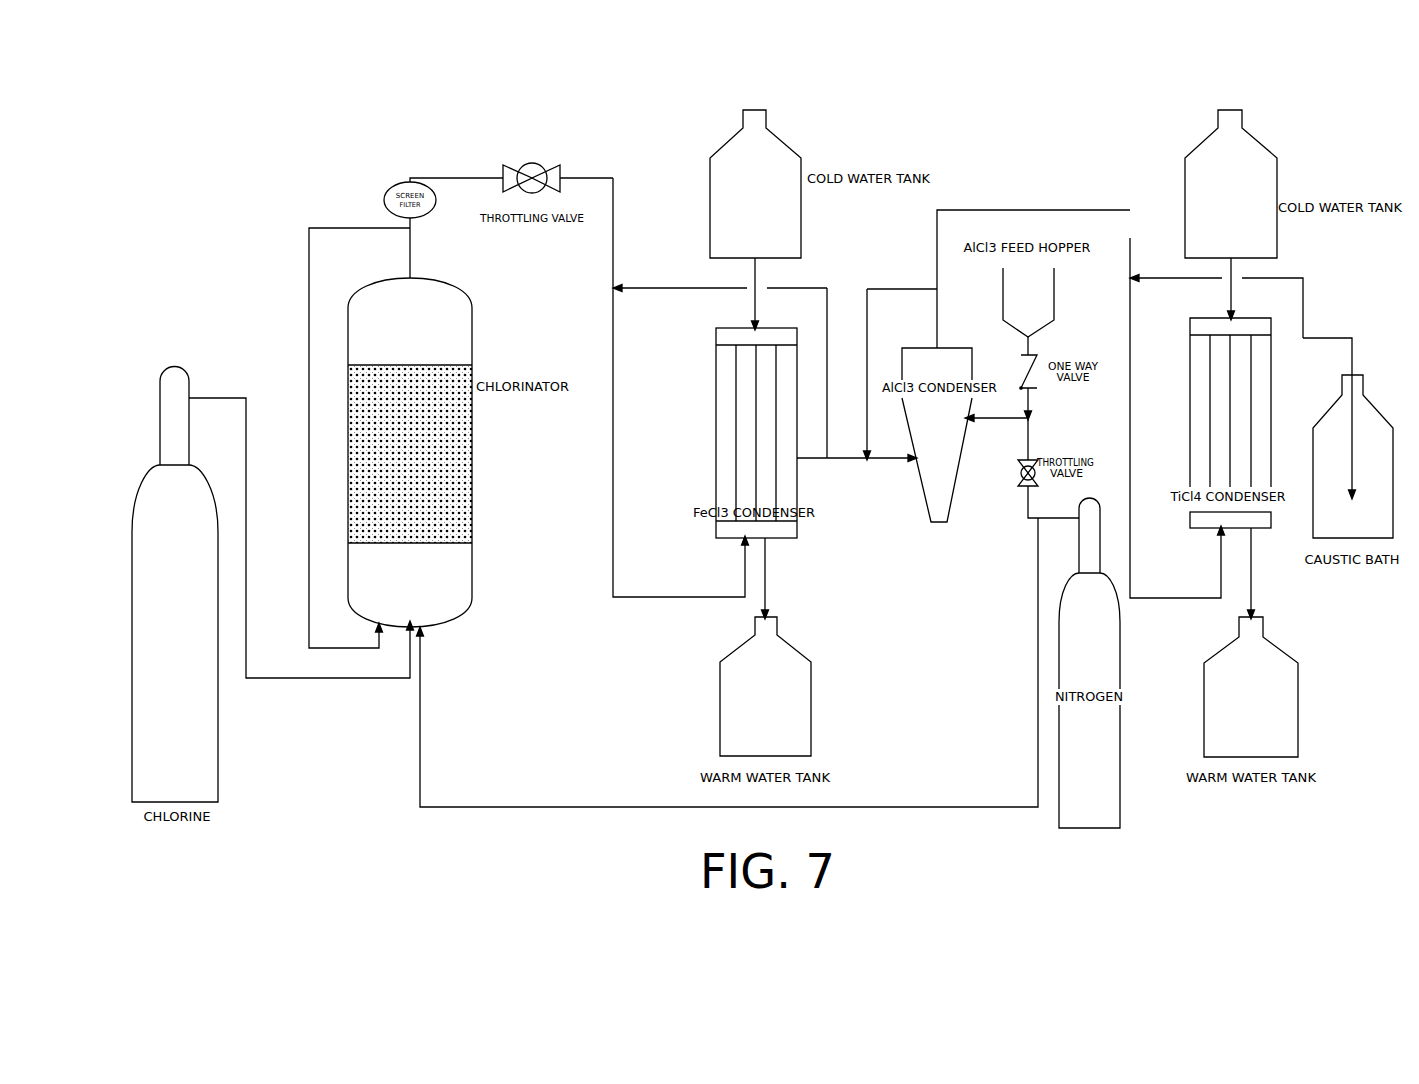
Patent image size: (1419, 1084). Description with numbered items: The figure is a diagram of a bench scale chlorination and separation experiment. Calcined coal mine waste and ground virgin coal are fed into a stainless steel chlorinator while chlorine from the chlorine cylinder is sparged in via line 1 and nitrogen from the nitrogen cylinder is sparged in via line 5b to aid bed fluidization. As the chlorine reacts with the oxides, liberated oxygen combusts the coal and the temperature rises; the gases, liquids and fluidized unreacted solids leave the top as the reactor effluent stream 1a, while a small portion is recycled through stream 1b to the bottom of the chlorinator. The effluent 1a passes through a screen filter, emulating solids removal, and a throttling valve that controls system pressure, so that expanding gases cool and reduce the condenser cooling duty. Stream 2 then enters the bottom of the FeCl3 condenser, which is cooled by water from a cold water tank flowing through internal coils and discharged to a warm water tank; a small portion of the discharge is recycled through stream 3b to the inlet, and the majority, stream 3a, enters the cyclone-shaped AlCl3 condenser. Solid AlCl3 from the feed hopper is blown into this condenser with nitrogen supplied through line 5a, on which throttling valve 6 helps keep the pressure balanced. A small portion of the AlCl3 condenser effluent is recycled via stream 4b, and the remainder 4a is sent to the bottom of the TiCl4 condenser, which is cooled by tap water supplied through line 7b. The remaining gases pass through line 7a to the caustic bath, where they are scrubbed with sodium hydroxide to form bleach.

The chlorine line 1 is at (301, 538).
The reactor effluent stream 1a is at (497, 228).
The recycle stream 1b is at (350, 438).
The stream to FeCl3 condenser 2 is at (681, 387).
The FeCl3 condenser discharge stream 3a is at (857, 375).
The FeCl3 condenser recycle stream 3b is at (773, 294).
The AlCl3 condenser effluent stream 4a is at (1033, 279).
The AlCl3 condenser recycle stream 4b is at (902, 280).
The nitrogen line 5a is at (1053, 502).
The nitrogen line to chlorinator 5b is at (728, 674).
The throttling valve 6 is at (1021, 468).
The TiCl4 condenser gas outlet line 7a is at (1325, 418).
The TiCl4 condenser cooling water line 7b is at (1216, 299).